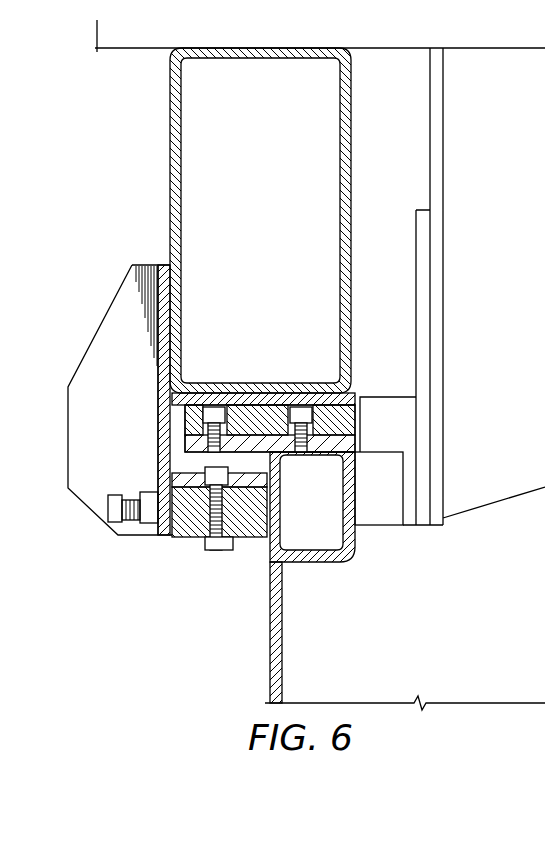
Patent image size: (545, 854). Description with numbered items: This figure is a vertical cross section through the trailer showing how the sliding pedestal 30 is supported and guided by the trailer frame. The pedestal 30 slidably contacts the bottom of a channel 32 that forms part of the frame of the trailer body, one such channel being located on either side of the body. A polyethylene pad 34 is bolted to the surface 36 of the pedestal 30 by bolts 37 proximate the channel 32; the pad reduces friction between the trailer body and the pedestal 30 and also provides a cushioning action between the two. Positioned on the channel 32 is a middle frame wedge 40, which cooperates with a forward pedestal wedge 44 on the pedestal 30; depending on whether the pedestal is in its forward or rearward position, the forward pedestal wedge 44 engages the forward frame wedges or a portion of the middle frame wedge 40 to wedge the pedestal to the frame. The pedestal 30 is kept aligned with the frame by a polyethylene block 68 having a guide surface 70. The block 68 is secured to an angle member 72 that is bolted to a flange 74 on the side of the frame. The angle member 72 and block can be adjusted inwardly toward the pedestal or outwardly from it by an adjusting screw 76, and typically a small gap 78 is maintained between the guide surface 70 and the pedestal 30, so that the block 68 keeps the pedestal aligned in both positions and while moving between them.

The pedestal 30 is at (270, 618).
The channel 32 is at (183, 171).
The polyethylene pad 34 is at (350, 400).
The surface 36 is at (325, 438).
The bolt 37 is at (290, 398).
The middle frame wedge 40 is at (404, 425).
The forward pedestal wedge 44 is at (389, 495).
The polyethylene block 68 is at (195, 526).
The guide surface 70 is at (275, 545).
The angle member 72 is at (180, 536).
The flange 74 is at (195, 478).
The adjusting screw 76 is at (122, 497).
The gap 78 is at (270, 495).